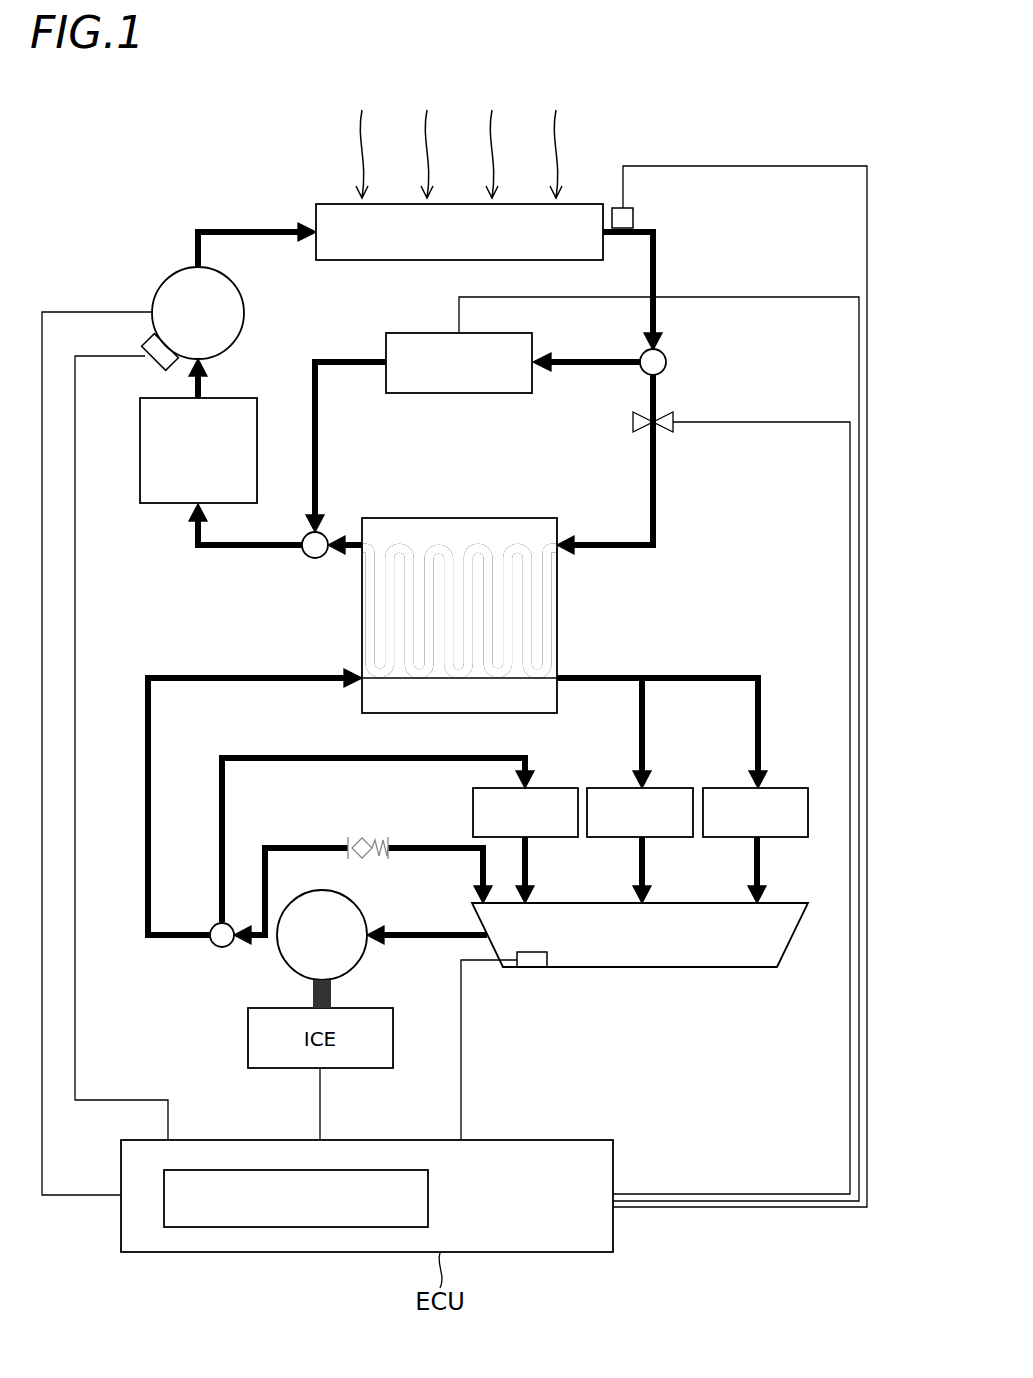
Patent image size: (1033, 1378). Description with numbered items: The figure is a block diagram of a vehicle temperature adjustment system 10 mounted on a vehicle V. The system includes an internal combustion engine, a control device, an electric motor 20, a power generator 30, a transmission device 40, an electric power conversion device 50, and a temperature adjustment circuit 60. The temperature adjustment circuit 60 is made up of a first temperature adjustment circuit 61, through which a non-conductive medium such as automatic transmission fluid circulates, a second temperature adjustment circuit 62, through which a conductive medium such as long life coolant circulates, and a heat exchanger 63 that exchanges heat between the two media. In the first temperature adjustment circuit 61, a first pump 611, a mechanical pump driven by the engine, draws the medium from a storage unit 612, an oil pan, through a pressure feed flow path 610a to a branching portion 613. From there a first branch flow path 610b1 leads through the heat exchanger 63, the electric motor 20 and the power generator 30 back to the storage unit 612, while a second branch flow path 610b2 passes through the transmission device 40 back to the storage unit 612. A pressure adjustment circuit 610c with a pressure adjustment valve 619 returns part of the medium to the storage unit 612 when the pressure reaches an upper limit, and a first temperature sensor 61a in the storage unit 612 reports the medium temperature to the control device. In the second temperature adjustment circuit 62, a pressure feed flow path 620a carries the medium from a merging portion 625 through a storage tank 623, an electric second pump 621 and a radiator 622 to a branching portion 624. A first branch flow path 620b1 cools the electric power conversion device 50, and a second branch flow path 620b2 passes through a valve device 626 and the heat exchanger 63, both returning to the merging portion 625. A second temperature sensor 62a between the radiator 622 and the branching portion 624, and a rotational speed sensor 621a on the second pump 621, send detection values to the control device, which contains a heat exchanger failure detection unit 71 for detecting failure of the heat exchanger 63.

The vehicle temperature adjustment system 10 is at (268, 160).
The electric motor 20 is at (797, 787).
The power generator 30 is at (680, 787).
The transmission device 40 is at (564, 787).
The electric power conversion device 50 is at (458, 395).
The temperature adjustment circuit 60 is at (668, 214).
The first temperature adjustment circuit 61 is at (706, 648).
The first temperature sensor 61a is at (532, 968).
The second temperature adjustment circuit 62 is at (680, 467).
The second temperature sensor 62a is at (623, 206).
The heat exchanger 63 is at (557, 600).
The heat exchanger failure detection unit 71 is at (428, 1200).
The pressure feed flow path 610a is at (416, 933).
The first branch flow path 610b1 is at (152, 738).
The second branch flow path 610b2 is at (226, 832).
The pressure adjustment circuit 610c is at (412, 847).
The first pump 611 is at (296, 896).
The storage unit 612 is at (688, 968).
The branching portion 613 is at (220, 950).
The pressure adjustment valve 619 is at (362, 840).
The pressure feed flow path 620a is at (196, 232).
The first branch flow path 620b1 is at (590, 360).
The second branch flow path 620b2 is at (600, 545).
The second pump 621 is at (166, 277).
The rotational speed sensor 621a is at (156, 362).
The radiator 622 is at (348, 262).
The storage tank 623 is at (233, 397).
The branching portion 624 is at (668, 362).
The merging portion 625 is at (312, 560).
The valve device 626 is at (632, 420).
The vehicle V is at (776, 142).